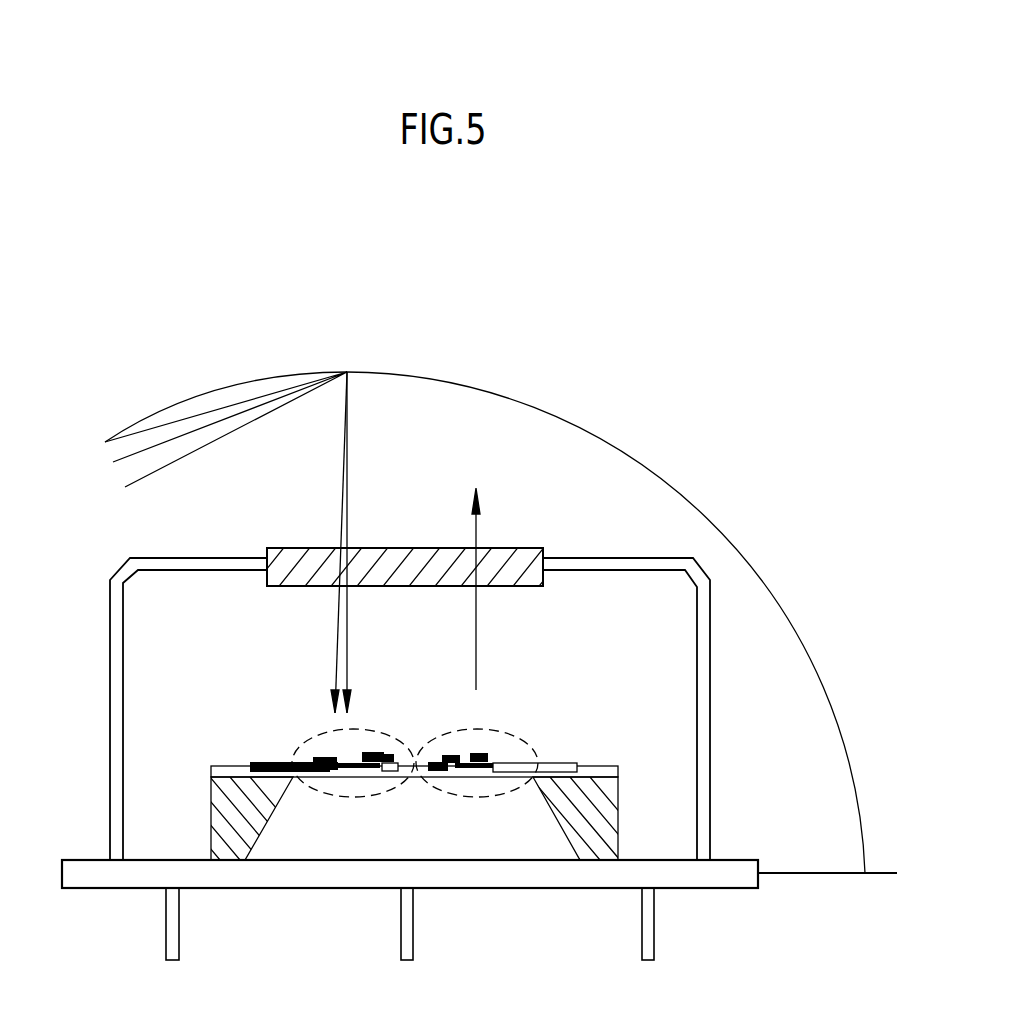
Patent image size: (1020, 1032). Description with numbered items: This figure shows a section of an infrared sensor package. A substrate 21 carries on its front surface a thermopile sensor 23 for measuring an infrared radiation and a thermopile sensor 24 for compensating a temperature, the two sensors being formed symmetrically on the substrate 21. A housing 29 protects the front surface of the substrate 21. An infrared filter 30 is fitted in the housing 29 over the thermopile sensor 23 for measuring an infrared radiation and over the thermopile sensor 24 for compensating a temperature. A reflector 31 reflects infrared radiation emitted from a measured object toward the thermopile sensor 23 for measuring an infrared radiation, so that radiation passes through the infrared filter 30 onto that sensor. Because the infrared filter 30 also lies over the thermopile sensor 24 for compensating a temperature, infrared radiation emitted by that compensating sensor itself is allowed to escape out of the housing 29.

The substrate 21 is at (597, 855).
The thermopile sensor for measuring an infrared radiation 23 is at (338, 797).
The thermopile sensor for compensating a temperature 24 is at (486, 797).
The housing 29 is at (110, 692).
The infrared filter 30 is at (307, 548).
The reflector 31 is at (593, 427).